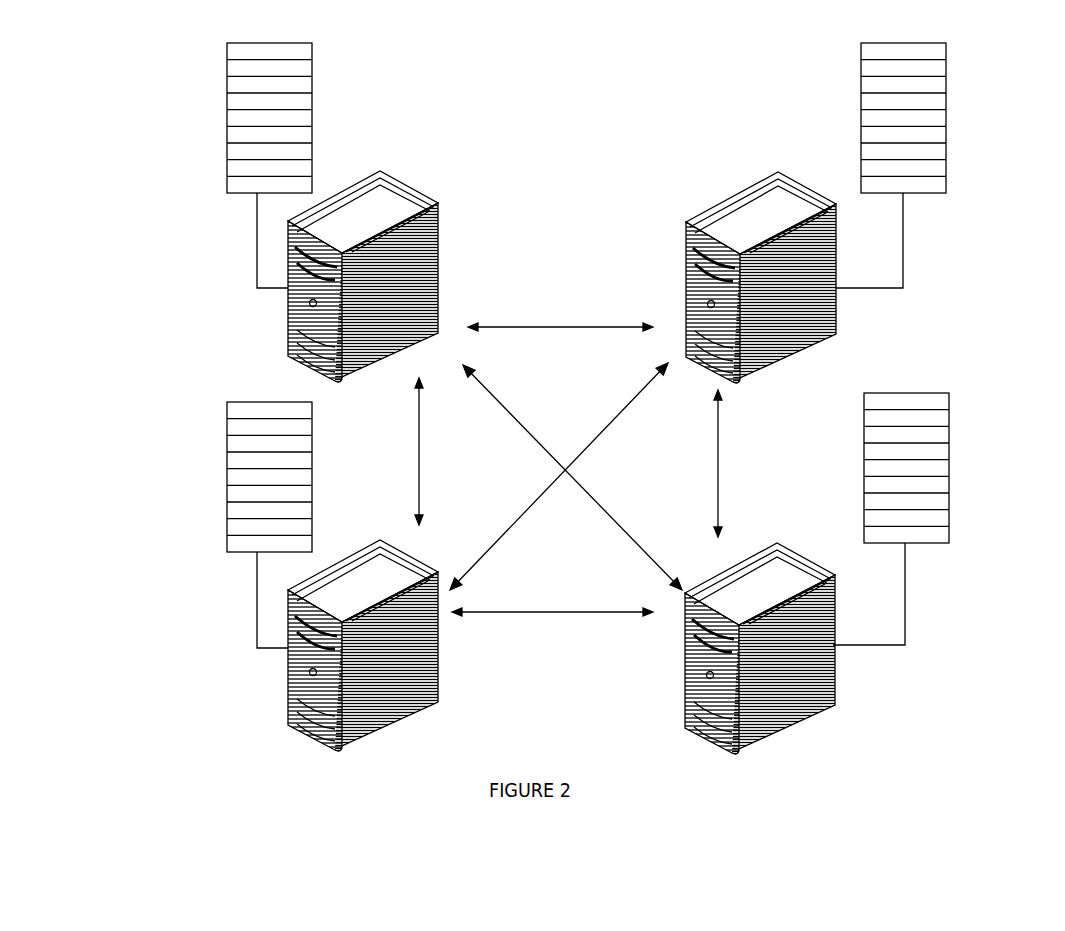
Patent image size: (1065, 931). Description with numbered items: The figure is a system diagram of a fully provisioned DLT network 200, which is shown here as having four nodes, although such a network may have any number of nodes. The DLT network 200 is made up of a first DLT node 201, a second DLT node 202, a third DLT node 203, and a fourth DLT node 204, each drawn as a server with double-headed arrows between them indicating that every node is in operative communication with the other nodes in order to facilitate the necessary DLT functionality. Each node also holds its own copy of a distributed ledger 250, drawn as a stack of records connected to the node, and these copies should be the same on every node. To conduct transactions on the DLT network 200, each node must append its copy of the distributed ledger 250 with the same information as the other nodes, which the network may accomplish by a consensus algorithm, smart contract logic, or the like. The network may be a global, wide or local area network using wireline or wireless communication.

The provisioned DLT network 200 is at (568, 398).
The first DLT node 201 is at (363, 305).
The second DLT node 202 is at (761, 306).
The third DLT node 203 is at (363, 674).
The fourth DLT node 204 is at (760, 673).
The distributed ledger 250 is at (585, 345).